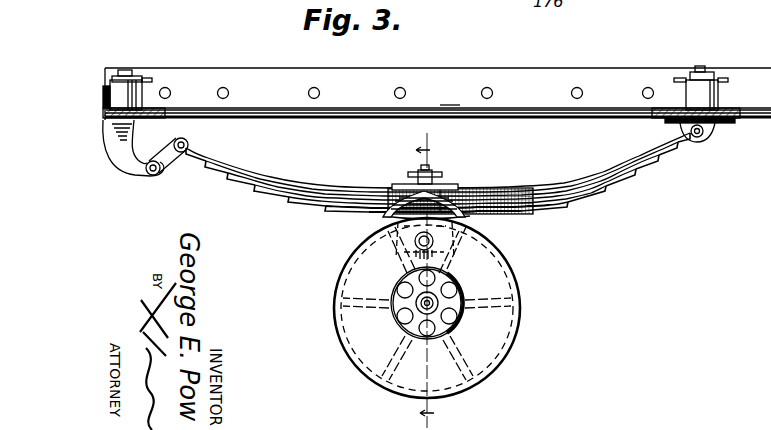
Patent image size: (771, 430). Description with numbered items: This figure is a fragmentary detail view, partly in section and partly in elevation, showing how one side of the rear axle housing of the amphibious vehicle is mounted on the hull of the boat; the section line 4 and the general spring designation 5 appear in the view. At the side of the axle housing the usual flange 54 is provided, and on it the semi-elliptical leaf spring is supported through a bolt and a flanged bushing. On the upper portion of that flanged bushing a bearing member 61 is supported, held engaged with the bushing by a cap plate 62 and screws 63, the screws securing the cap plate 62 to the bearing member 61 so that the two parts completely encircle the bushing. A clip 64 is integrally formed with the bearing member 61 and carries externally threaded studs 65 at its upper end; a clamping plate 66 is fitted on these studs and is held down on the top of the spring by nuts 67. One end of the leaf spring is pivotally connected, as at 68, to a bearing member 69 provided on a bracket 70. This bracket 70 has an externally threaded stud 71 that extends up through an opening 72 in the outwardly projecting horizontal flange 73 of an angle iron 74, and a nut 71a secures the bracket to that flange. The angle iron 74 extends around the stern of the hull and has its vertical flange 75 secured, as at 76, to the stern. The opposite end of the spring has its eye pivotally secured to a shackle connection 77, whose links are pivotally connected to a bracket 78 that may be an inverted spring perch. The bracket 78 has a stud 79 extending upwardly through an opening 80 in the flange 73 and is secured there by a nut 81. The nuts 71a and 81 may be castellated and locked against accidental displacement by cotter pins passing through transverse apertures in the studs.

The section line 4 is at (415, 281).
The leaf spring 5 is at (590, 186).
The flange 54 is at (495, 327).
The bearing member 61 is at (468, 228).
The cap plate 62 is at (400, 255).
The screws 63 is at (390, 290).
The clip 64 is at (470, 190).
The externally threaded studs 65 is at (432, 170).
The clamping plate 66 is at (396, 186).
The nuts 67 is at (445, 188).
The pivotal connection 68 is at (699, 138).
The bearing member 69 is at (714, 130).
The bracket 70 is at (733, 108).
The externally threaded stud 71 is at (706, 72).
The nut 71a is at (686, 92).
The opening 72 is at (678, 119).
The horizontal flange 73 is at (450, 110).
The angle iron 74 is at (252, 108).
The vertical flange 75 is at (533, 78).
The securing connection 76 is at (405, 92).
The shackle connection 77 is at (178, 168).
The bracket 78 is at (142, 175).
The stud 79 is at (134, 78).
The opening 80 is at (160, 92).
The nut 81 is at (112, 78).